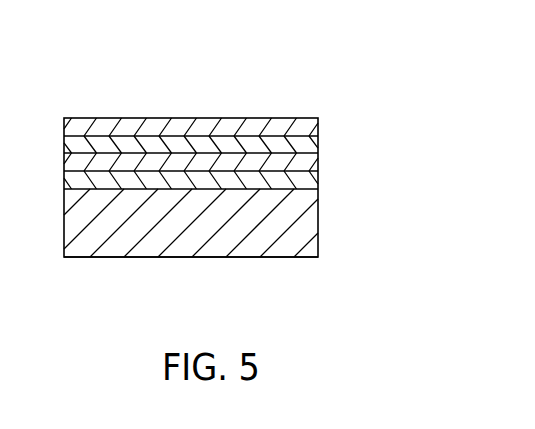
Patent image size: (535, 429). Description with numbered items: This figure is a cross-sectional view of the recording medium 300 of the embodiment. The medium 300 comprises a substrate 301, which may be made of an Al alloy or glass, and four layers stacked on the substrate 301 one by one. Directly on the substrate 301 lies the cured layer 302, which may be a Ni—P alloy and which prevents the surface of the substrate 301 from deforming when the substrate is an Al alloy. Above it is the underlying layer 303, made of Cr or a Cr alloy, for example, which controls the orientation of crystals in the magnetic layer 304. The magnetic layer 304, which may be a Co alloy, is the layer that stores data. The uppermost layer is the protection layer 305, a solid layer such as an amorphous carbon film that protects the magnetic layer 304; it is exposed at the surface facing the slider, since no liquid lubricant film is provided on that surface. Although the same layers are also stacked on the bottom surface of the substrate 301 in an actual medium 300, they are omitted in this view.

The recording medium 300 is at (237, 117).
The substrate 301 is at (318, 223).
The cured layer 302 is at (318, 179).
The underlying layer 303 is at (318, 163).
The magnetic layer 304 is at (318, 145).
The protection layer 305 is at (318, 128).